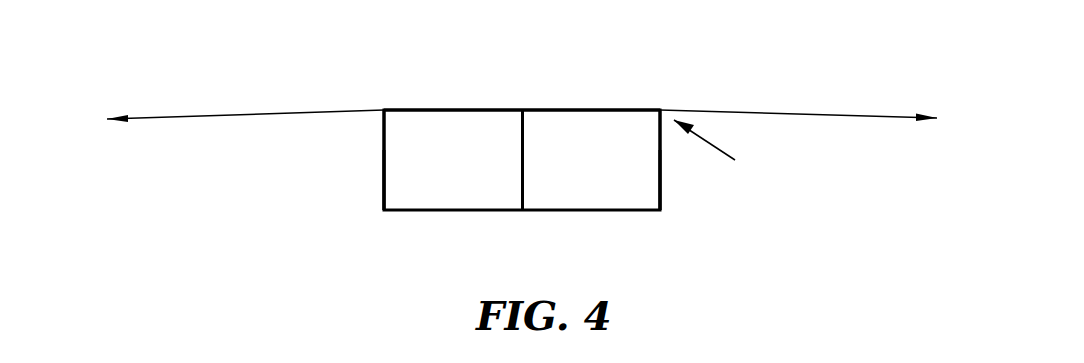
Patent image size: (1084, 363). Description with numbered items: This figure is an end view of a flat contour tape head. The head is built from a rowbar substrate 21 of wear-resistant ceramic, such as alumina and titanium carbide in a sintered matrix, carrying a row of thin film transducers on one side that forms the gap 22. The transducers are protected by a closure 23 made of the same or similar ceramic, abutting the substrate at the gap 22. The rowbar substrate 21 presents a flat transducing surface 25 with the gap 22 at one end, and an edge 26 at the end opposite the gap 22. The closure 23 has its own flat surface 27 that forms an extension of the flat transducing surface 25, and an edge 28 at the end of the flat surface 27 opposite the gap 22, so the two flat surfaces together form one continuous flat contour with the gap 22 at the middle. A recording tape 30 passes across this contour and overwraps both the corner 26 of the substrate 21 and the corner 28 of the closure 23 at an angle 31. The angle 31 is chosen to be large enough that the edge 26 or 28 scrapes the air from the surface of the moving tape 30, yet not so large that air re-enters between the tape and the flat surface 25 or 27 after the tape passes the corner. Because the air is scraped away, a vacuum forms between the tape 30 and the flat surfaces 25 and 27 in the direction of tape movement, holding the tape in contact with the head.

The rowbar substrate 21 is at (661, 191).
The gap 22 is at (521, 109).
The closure 23 is at (383, 195).
The flat transducing surface 25 is at (604, 109).
The edge 26 is at (656, 112).
The flat surface 27 is at (441, 109).
The edge 28 is at (388, 112).
The recording tape 30 is at (782, 109).
The angle 31 is at (724, 154).